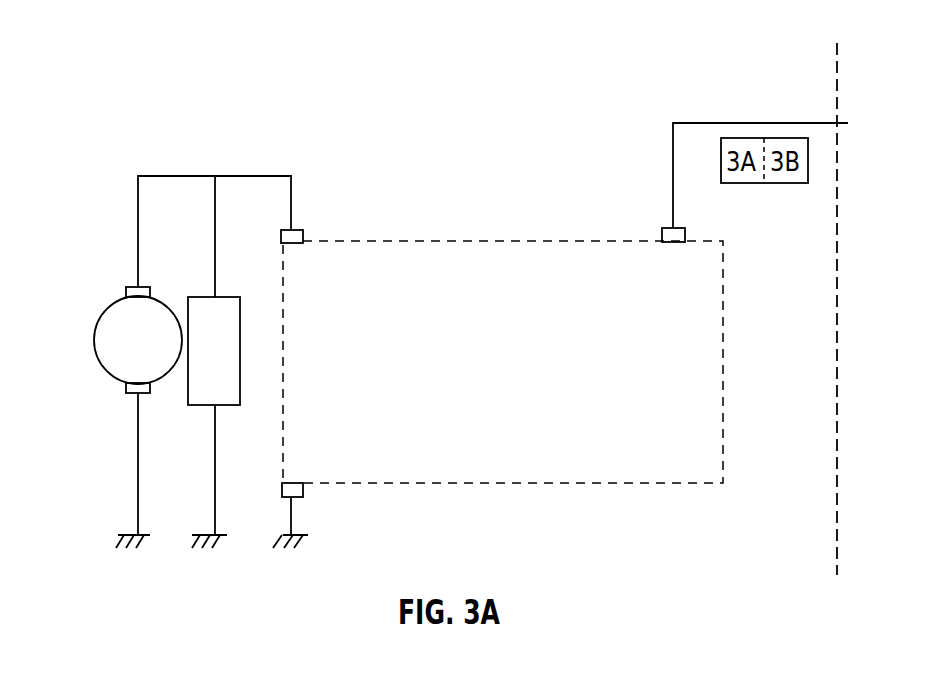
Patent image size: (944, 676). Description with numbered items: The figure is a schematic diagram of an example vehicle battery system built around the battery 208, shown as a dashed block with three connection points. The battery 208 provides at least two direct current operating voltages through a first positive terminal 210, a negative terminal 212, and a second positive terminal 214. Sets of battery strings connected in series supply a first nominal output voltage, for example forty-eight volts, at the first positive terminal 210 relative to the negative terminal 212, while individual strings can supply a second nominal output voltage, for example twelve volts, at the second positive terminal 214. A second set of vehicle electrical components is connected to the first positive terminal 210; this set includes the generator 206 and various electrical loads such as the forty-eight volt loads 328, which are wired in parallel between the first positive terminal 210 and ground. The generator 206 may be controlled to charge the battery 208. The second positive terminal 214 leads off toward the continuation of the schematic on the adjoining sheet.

The generator 206 is at (114, 300).
The 48 V loads 328 is at (232, 297).
The battery 208 is at (500, 240).
The first positive terminal 210 is at (297, 229).
The negative terminal 212 is at (303, 491).
The second positive terminal 214 is at (669, 228).